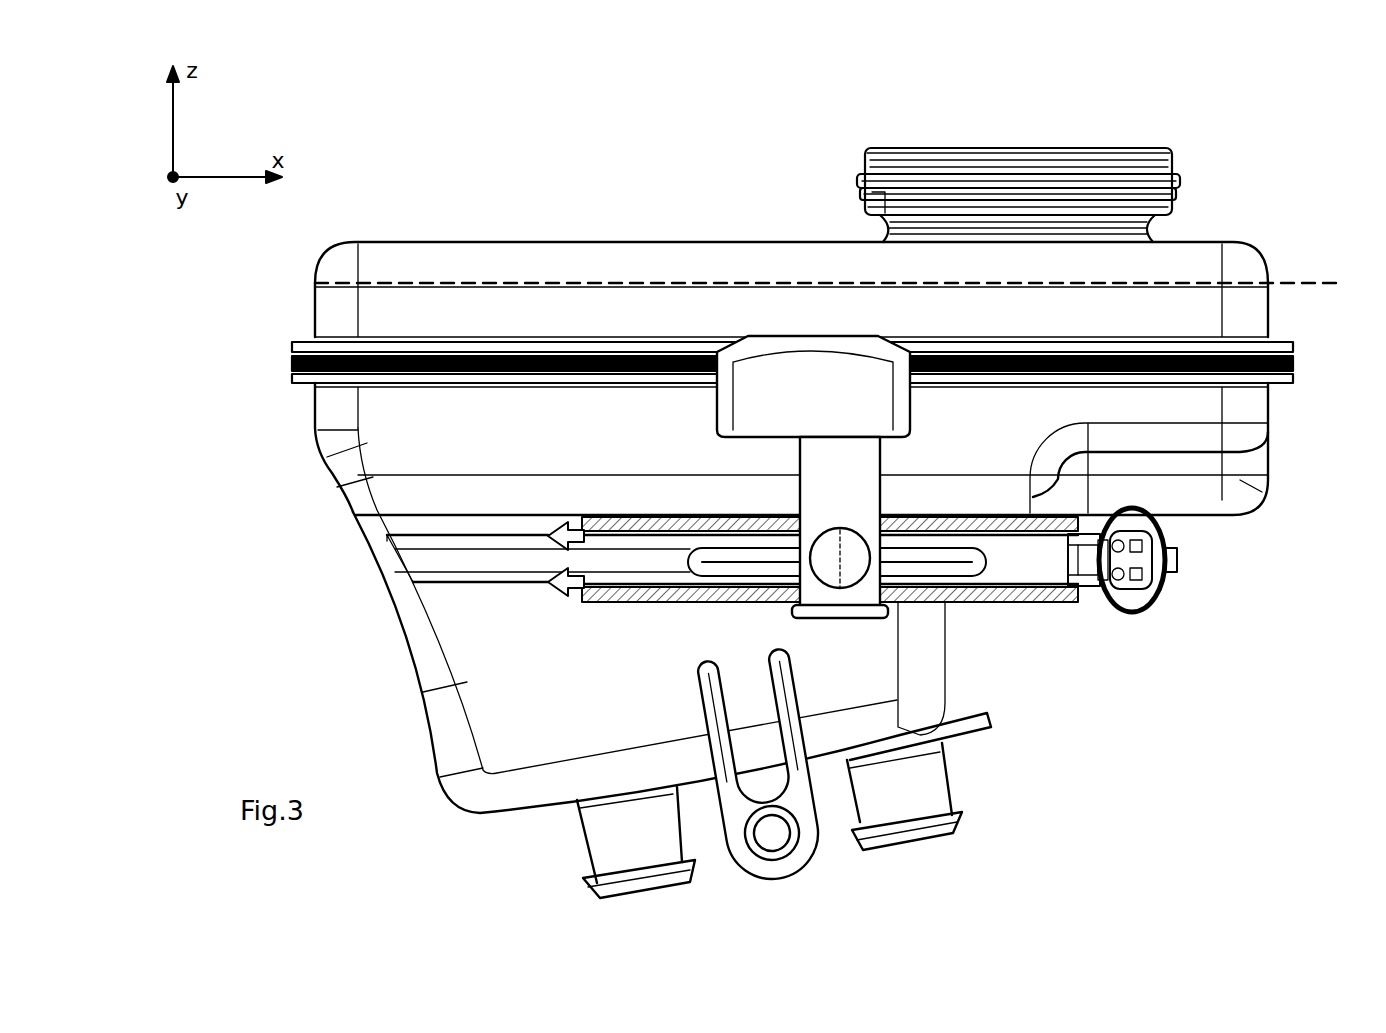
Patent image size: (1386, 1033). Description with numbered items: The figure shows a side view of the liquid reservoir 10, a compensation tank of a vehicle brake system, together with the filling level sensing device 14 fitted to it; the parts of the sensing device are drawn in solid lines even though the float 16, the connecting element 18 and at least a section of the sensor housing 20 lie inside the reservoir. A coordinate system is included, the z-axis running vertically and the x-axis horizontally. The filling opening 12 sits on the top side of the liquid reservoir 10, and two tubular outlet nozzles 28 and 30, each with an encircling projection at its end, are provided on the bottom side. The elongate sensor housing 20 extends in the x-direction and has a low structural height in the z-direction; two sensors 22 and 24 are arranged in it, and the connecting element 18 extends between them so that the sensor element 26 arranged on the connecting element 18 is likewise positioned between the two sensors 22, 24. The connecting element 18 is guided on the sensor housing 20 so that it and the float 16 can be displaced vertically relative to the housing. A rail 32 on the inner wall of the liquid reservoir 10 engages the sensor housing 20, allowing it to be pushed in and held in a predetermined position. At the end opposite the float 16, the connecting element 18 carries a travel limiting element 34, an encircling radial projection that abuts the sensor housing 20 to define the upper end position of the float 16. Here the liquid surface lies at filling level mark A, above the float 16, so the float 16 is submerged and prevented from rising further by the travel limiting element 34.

The liquid reservoir 10 is at (593, 235).
The filling opening 12 is at (1000, 185).
The filling level sensing device 14 is at (1170, 614).
The float 16 is at (787, 378).
The connecting element 18 is at (858, 512).
The sensor housing 20 is at (1040, 600).
The sensor 22 is at (710, 565).
The sensor 24 is at (955, 565).
The sensor element 26 is at (850, 565).
The outlet nozzle 28 is at (640, 843).
The outlet nozzle 30 is at (923, 768).
The rail 32 is at (418, 562).
The travel limiting element 34 is at (808, 618).